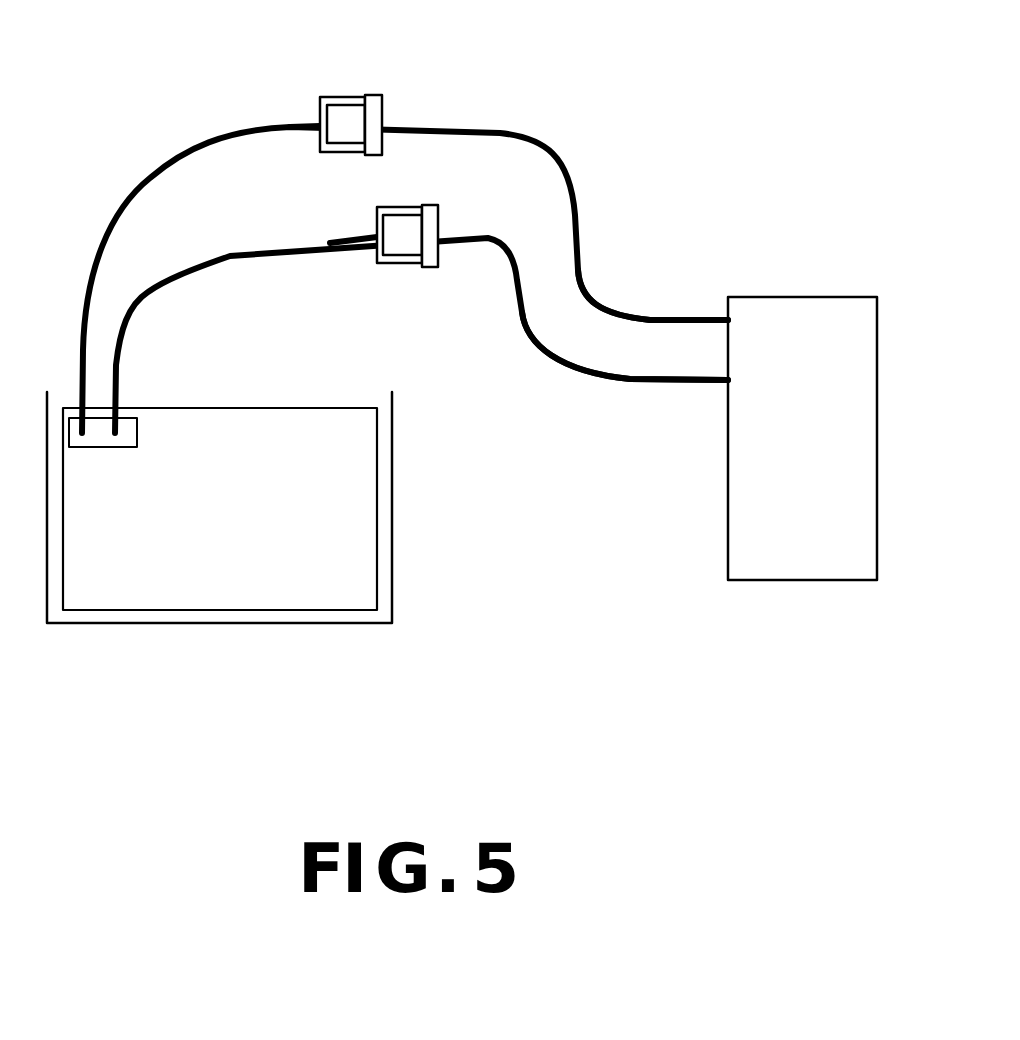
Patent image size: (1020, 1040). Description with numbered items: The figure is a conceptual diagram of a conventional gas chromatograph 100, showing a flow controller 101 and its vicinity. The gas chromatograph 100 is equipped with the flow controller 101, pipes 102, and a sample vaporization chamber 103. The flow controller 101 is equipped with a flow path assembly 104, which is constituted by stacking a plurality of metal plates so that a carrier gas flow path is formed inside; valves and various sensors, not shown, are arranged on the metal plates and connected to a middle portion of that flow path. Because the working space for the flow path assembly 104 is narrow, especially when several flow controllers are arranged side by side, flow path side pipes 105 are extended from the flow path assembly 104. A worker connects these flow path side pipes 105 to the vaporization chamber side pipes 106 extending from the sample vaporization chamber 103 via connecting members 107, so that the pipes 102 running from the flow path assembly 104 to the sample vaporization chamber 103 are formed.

The gas chromatograph 100 is at (597, 106).
The flow controller 101 is at (228, 612).
The pipes 102 is at (260, 126).
The sample vaporization chamber 103 is at (781, 580).
The flow path assembly 104 is at (118, 590).
The flow path side pipes 105 is at (160, 168).
The vaporization chamber side pipes 106 is at (593, 300).
The connecting members 107 is at (348, 97).